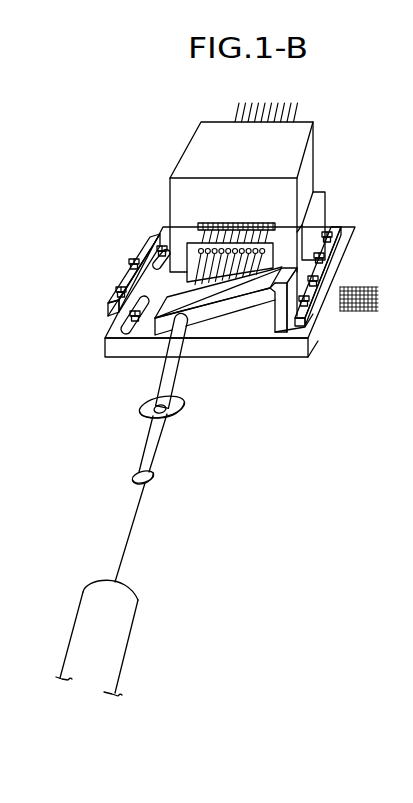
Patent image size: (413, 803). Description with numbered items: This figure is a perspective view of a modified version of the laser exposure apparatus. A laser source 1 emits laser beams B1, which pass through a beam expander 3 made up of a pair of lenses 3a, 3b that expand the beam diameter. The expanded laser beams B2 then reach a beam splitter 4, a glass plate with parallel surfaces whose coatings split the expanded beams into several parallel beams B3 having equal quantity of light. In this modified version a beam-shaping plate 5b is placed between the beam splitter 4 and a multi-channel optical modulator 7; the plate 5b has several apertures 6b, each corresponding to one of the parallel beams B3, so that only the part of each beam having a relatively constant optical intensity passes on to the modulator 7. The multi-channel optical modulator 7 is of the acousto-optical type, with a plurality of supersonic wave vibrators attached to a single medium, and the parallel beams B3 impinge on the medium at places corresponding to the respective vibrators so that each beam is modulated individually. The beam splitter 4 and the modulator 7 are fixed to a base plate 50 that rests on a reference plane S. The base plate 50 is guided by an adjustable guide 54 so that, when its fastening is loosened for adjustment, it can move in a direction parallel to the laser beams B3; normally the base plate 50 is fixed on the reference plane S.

The laser source 1 is at (124, 628).
The laser beams B1 is at (128, 540).
The beam expander 3 is at (200, 438).
The lens 3a is at (152, 475).
The lens 3b is at (185, 412).
The expanded laser beams B2 is at (188, 370).
The beam splitter 4 is at (248, 305).
The parallel beams B3 is at (157, 229).
The adjustable guide 54 is at (130, 254).
The beam-shaping plate 5b is at (337, 233).
The apertures 6b is at (262, 259).
The multi-channel optical modulator 7 is at (312, 190).
The base plate 50 is at (318, 340).
The reference plane S is at (359, 299).